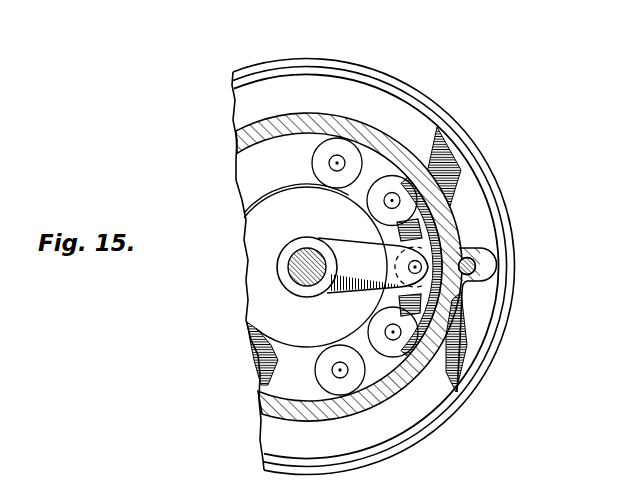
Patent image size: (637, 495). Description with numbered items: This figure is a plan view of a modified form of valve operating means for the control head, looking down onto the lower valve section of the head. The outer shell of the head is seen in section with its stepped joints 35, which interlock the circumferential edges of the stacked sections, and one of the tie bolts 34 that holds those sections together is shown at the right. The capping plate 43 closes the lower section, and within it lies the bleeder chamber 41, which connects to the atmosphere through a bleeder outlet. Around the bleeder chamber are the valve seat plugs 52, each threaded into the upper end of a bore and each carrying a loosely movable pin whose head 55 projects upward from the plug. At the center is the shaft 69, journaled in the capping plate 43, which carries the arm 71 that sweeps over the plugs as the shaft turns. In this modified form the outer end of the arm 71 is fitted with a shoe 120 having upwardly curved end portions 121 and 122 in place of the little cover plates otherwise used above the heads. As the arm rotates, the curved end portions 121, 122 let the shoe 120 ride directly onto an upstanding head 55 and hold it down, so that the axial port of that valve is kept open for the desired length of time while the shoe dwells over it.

The stepped joints 35 is at (388, 80).
The capping plate 43 is at (437, 128).
The bleeder chamber 41 is at (266, 337).
The valve seat plug 52 is at (313, 166).
The head 55 is at (338, 163).
The shaft 69 is at (310, 277).
The arm 71 is at (348, 245).
The shoe 120 is at (420, 264).
The upwardly curved end portion 121 is at (412, 228).
The upwardly curved end portion 122 is at (399, 307).
The tie bolts 34 is at (475, 268).